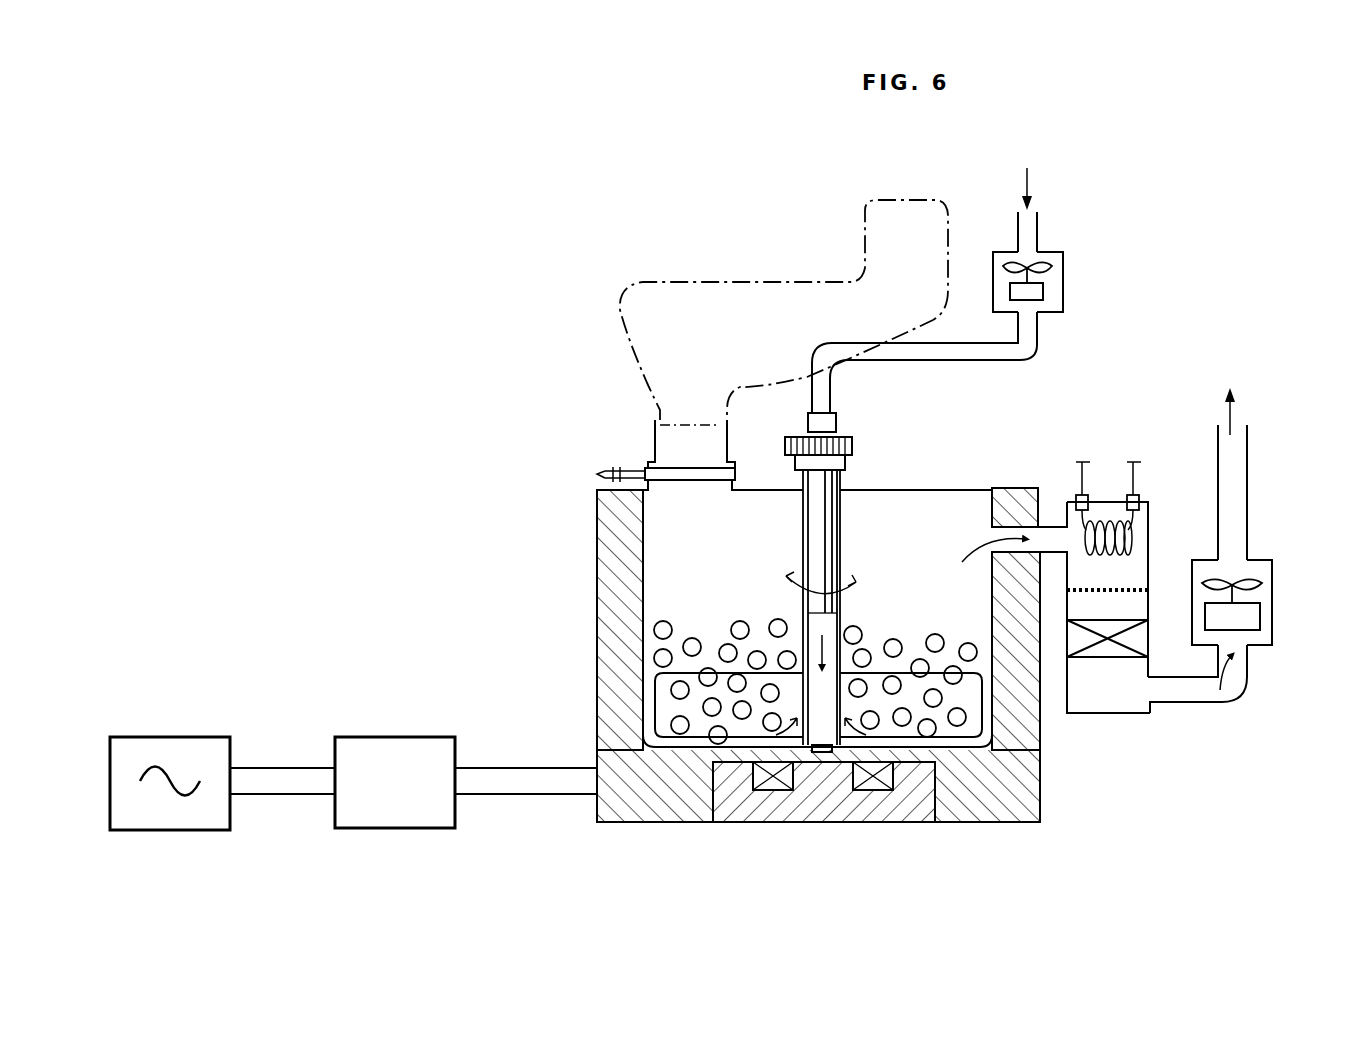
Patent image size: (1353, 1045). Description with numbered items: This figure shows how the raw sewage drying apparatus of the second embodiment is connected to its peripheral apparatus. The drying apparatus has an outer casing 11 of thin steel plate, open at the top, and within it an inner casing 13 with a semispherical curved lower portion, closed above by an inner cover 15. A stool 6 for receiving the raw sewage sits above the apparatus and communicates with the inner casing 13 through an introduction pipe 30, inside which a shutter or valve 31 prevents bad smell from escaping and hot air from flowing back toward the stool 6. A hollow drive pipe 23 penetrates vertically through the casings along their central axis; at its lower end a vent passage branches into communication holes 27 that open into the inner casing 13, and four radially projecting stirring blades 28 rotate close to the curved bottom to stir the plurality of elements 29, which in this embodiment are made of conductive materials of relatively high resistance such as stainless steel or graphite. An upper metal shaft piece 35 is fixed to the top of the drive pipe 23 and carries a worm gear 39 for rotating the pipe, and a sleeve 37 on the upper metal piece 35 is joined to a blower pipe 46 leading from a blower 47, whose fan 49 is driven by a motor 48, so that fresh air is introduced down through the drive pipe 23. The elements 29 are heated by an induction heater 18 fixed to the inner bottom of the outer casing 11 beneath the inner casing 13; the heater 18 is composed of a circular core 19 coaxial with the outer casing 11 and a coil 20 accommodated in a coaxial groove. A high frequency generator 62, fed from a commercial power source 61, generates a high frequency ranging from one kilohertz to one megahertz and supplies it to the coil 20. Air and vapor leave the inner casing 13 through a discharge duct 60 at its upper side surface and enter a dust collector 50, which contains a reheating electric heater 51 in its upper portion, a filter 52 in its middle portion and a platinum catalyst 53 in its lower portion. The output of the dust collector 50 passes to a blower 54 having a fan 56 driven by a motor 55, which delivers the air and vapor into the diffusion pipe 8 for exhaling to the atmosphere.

The stool 6 is at (698, 280).
The diffusion pipe 8 is at (1247, 514).
The outer casing 11 is at (597, 584).
The inner casing 13 is at (643, 584).
The inner cover 15 is at (953, 490).
The induction heater 18 is at (935, 800).
The core 19 is at (858, 790).
The coil 20 is at (777, 790).
The hollow drive pipe 23 is at (840, 524).
The communication holes 27 is at (815, 755).
The stirring blades 28 is at (878, 673).
The elements to be heated 29 is at (722, 650).
The introduction pipe 30 is at (655, 442).
The shutter or valve 31 is at (700, 480).
The upper metal shaft piece 35 is at (808, 432).
The sleeve 37 is at (836, 423).
The worm gear 39 is at (852, 448).
The blower pipe 46 is at (1005, 360).
The blower 47 is at (1050, 252).
The motor 48 is at (1043, 292).
The fan 49 is at (1052, 268).
The dust collector 50 is at (1150, 713).
The reheating electric heater 51 is at (1138, 533).
The filter 52 is at (1128, 590).
The catalyst 53 is at (1100, 660).
The blower 54 is at (1272, 572).
The motor 55 is at (1255, 620).
The fan 56 is at (1260, 585).
The discharge duct 60 is at (1009, 546).
The commercial power source 61 is at (219, 738).
The high frequency generator 62 is at (438, 740).